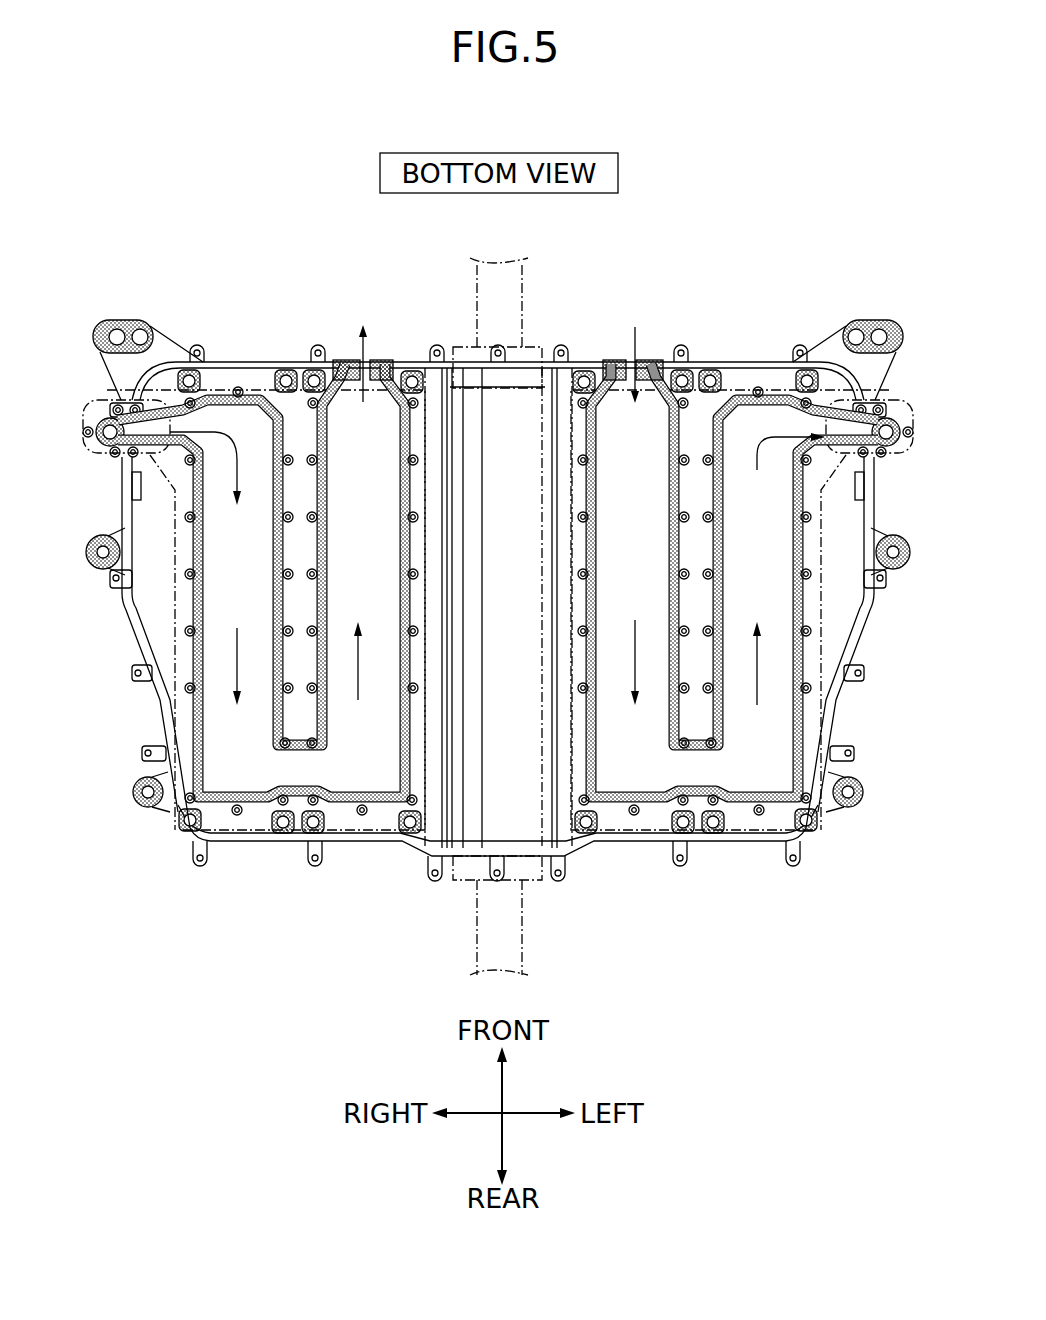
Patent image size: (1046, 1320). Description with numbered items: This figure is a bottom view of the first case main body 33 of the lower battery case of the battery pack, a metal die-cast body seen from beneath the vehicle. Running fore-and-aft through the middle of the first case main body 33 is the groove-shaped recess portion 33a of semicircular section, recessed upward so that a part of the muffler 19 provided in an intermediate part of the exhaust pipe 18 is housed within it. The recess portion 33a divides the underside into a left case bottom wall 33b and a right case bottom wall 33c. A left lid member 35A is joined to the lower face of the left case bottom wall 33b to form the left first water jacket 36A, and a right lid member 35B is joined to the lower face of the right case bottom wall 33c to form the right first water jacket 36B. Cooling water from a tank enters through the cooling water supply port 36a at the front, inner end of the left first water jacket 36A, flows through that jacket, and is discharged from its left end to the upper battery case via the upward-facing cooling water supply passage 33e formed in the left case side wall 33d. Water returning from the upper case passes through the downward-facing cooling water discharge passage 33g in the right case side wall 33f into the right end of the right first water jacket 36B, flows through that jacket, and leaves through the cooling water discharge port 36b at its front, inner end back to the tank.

The exhaust pipe 18 is at (522, 297).
The muffler 19 is at (542, 712).
The first case main body 33 is at (647, 315).
The recess portion 33a is at (528, 597).
The left case bottom wall 33b is at (705, 427).
The right case bottom wall 33c is at (300, 425).
The left case side wall 33d is at (872, 502).
The cooling water supply passage 33e is at (887, 430).
The right case side wall 33f is at (127, 510).
The cooling water discharge passage 33g is at (109, 426).
The left lid member 35A is at (822, 613).
The right lid member 35B is at (173, 607).
The left first water jacket 36A is at (658, 597).
The right first water jacket 36B is at (262, 597).
The cooling water supply port 36a is at (638, 358).
The cooling water discharge port 36b is at (360, 352).